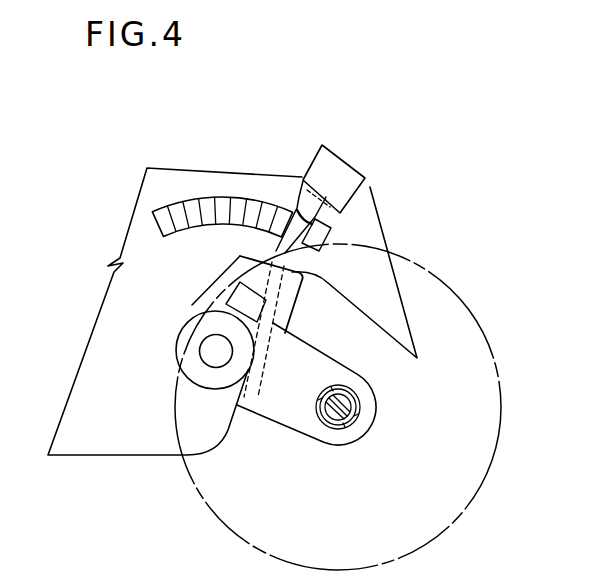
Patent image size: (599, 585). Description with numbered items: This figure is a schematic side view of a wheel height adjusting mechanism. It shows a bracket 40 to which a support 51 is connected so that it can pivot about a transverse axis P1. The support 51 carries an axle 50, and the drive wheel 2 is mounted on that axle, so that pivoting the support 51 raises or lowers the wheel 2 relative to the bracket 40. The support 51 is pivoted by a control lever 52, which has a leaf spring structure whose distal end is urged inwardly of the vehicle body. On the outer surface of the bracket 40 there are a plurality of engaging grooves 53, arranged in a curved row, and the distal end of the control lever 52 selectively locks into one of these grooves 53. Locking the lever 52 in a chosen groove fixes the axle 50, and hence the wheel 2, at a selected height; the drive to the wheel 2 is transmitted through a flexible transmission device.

The drive wheel 2 is at (469, 308).
The bracket 40 is at (112, 332).
The axle 50 is at (346, 418).
The support 51 is at (222, 395).
The control lever 52 is at (356, 161).
The engaging grooves 53 is at (174, 207).
The transverse axis P1 is at (210, 337).